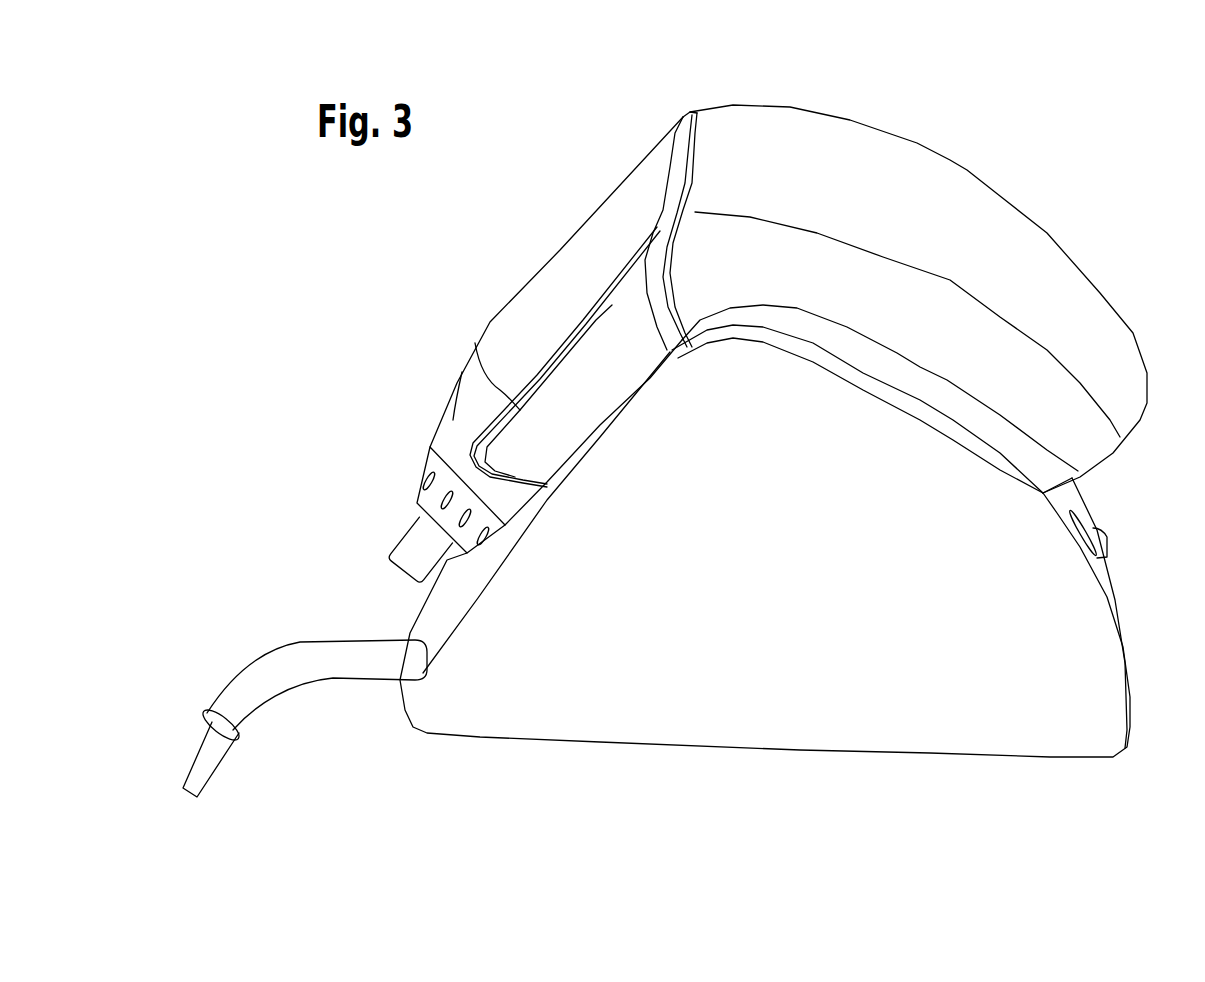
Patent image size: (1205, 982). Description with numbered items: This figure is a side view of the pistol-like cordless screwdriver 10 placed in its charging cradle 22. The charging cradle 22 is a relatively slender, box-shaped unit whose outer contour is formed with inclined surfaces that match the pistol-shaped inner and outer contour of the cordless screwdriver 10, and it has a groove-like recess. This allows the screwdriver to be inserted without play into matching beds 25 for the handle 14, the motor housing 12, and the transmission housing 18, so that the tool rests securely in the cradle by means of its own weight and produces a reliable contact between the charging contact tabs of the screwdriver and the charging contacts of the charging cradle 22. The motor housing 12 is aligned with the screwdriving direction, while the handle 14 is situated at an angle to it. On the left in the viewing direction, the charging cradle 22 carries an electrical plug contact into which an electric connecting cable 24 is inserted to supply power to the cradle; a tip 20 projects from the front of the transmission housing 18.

The cordless screwdriver 10 is at (830, 97).
The motor housing 12 is at (618, 212).
The handle 14 is at (943, 195).
The transmission housing 18 is at (473, 418).
The tip / nozzle 20 is at (413, 550).
The charging cradle 22 is at (795, 715).
The electric connecting cable 24 is at (325, 658).
The beds 25 is at (900, 390).